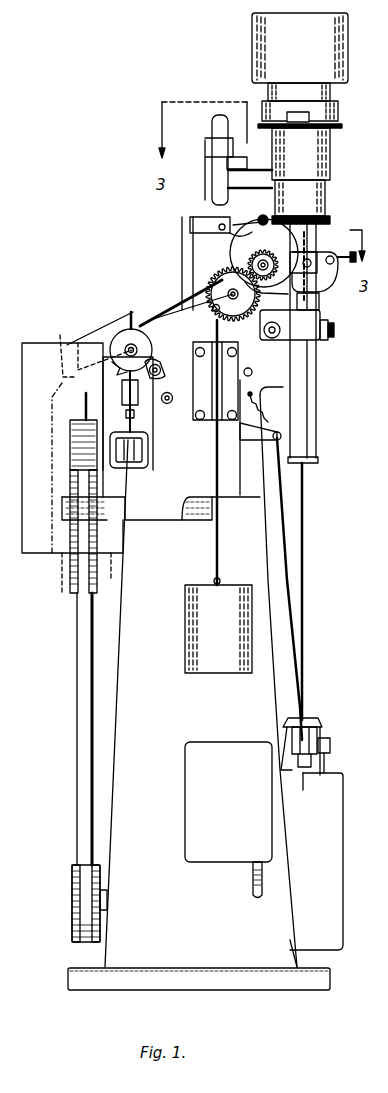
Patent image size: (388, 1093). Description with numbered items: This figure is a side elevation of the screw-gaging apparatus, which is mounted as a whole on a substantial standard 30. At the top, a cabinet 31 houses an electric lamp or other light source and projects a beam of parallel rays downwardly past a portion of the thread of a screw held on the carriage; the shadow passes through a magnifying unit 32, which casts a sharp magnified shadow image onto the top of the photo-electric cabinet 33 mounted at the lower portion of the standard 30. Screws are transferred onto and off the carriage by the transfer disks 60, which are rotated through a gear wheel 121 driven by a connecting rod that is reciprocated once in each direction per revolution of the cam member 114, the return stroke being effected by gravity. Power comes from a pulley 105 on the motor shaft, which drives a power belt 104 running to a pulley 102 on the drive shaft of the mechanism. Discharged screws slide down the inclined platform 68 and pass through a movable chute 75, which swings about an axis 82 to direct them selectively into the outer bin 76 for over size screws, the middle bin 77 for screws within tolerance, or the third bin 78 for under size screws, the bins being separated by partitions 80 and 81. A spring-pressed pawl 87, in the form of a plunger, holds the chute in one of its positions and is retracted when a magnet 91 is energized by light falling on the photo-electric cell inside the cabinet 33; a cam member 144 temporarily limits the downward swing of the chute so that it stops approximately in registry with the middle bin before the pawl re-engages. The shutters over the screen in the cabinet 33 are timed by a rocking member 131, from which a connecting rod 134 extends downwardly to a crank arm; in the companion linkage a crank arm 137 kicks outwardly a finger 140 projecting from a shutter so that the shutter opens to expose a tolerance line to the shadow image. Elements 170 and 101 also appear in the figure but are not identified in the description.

The cabinet 31 is at (353, 50).
The pawl 87 is at (228, 238).
The inclined platform 68 is at (168, 297).
The movable chute 75 is at (120, 330).
The gear wheel 121 is at (190, 330).
The transfer disks 60 is at (283, 246).
The magnifying unit 32 is at (315, 352).
The axis 82 is at (133, 328).
The cam member 144 is at (152, 393).
The magnet 91 is at (150, 462).
The cam member 114 is at (206, 425).
The rocking member 131 is at (280, 422).
The connecting rod 134 is at (290, 502).
The outer bin 76 is at (34, 555).
The partition 80 is at (61, 346).
The middle bin 77 is at (55, 502).
The third bin 78 is at (112, 579).
The partition 81 is at (86, 400).
The pulley 102 is at (97, 527).
The power belt 104 is at (77, 752).
The standard 30 is at (135, 676).
The pulley 105 is at (72, 890).
The box 170 is at (218, 755).
The crank arm 137 is at (318, 725).
The finger 140 is at (330, 768).
The photo-electric cabinet 33 is at (333, 840).
The element 101 is at (380, 517).